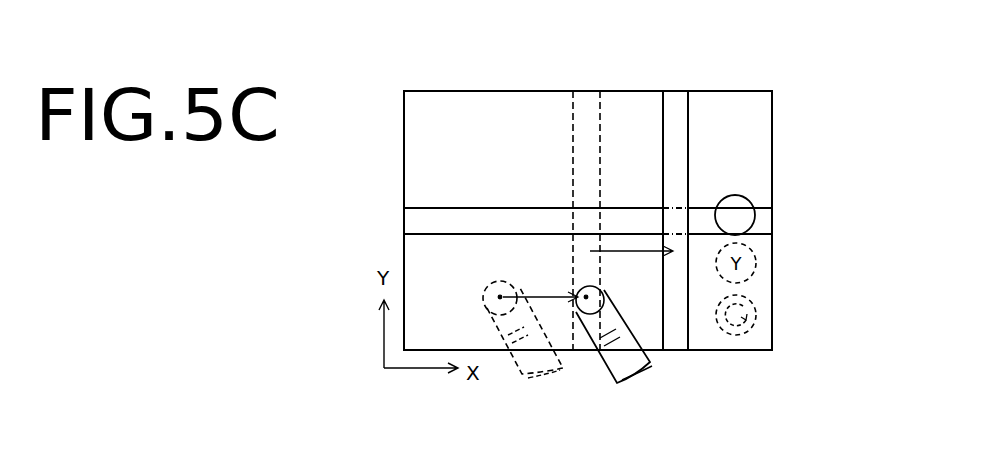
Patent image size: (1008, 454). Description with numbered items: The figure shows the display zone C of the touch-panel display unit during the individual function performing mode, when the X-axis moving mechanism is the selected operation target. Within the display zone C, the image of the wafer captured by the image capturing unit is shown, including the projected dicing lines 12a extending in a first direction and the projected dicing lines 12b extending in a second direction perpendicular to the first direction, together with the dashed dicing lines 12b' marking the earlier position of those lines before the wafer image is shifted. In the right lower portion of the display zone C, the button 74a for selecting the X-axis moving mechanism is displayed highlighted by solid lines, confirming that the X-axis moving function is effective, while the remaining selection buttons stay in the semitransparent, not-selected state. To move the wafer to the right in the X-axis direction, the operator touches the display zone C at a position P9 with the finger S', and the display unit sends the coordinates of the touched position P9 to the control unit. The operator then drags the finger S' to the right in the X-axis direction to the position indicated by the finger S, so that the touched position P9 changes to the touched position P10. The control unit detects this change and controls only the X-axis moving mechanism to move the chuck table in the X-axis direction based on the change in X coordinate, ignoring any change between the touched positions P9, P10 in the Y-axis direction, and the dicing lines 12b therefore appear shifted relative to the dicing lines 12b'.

The display zone C is at (488, 91).
The projected dicing lines 12a is at (490, 233).
The projected dicing lines 12b is at (709, 201).
The vertical guide line before movement 12b' is at (622, 201).
The button 74a is at (757, 218).
The touched position P9 is at (486, 304).
The touched position P10 is at (582, 296).
The finger S is at (641, 337).
The finger S' is at (515, 353).